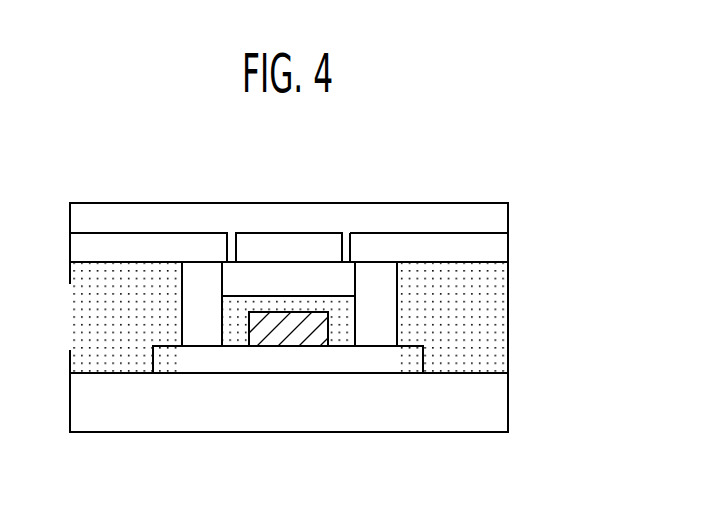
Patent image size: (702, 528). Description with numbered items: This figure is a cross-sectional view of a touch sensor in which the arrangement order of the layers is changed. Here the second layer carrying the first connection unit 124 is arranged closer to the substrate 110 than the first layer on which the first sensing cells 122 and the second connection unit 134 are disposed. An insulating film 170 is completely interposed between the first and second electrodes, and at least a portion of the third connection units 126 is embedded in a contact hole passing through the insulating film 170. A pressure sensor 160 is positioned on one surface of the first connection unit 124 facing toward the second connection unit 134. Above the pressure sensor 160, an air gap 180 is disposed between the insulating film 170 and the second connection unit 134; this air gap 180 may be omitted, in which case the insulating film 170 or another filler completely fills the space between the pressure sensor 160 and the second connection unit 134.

The substrate 110 is at (497, 402).
The first sensing cells 122 is at (497, 248).
The first connection unit 124 is at (420, 360).
The third connection units 126 is at (385, 283).
The second connection unit 134 is at (255, 243).
The pressure sensor 160 is at (265, 328).
The insulating film 170 is at (413, 328).
The air gap 180 is at (318, 276).